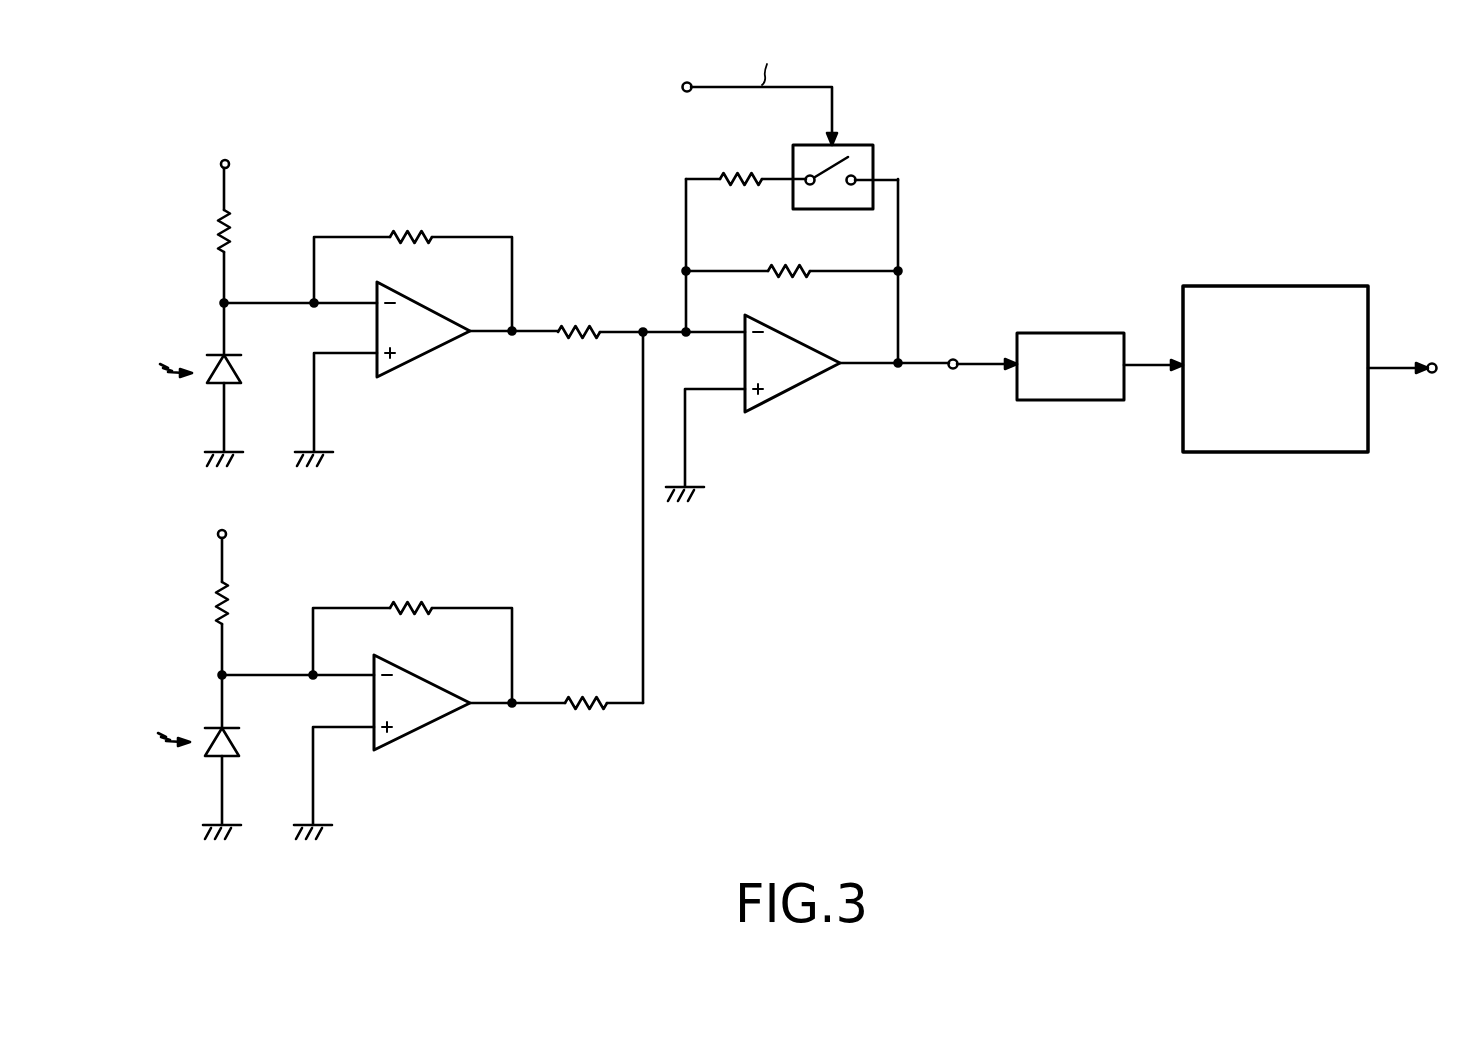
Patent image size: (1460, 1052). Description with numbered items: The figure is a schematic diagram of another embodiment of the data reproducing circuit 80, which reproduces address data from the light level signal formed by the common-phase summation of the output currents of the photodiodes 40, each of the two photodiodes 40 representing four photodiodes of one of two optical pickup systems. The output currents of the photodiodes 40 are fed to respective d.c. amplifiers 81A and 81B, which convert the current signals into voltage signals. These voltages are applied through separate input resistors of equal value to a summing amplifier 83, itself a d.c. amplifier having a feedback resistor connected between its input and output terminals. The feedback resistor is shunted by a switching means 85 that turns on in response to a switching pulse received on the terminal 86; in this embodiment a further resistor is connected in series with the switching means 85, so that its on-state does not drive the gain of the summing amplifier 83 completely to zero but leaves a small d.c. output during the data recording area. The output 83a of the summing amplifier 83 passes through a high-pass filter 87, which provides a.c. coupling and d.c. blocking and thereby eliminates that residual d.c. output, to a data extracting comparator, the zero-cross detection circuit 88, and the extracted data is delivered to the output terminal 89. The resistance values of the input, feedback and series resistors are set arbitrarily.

The photodiodes 40 is at (236, 366).
The data reproducing circuit 80 is at (807, 439).
The d.c. amplifier 81A is at (417, 360).
The d.c. amplifier 81B is at (425, 728).
The summing amplifier 83 is at (793, 390).
The output of summing amplifier 83a is at (957, 356).
The switching means 85 is at (873, 153).
The terminal 86 is at (682, 87).
The high-pass filter 87 is at (1102, 333).
The zero-cross detection circuit 88 is at (1328, 287).
The output terminal 89 is at (1429, 360).